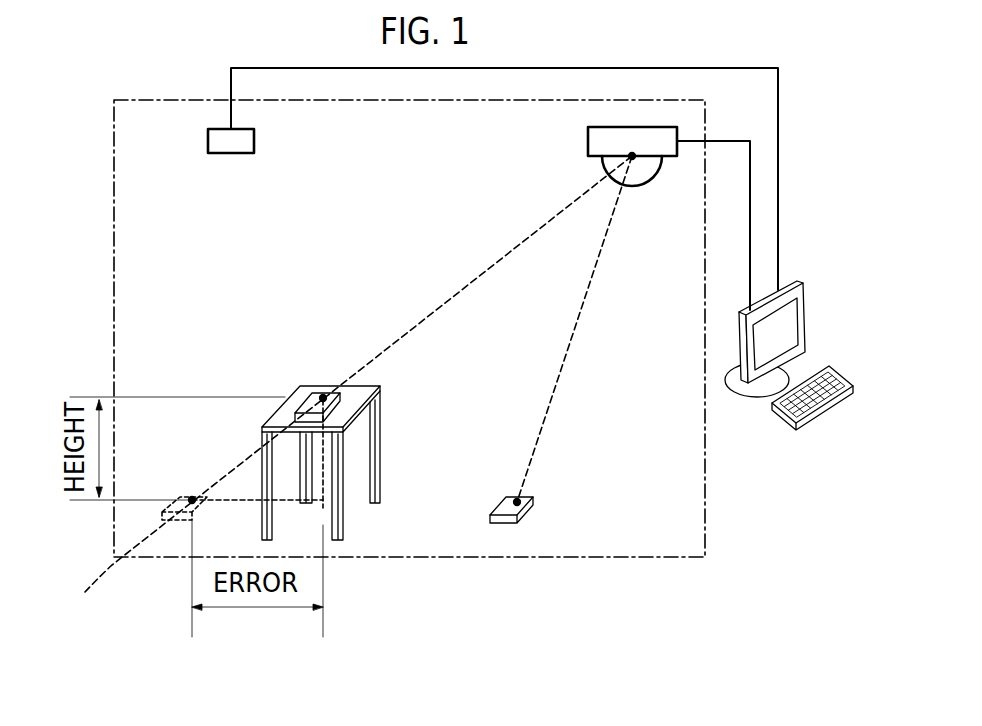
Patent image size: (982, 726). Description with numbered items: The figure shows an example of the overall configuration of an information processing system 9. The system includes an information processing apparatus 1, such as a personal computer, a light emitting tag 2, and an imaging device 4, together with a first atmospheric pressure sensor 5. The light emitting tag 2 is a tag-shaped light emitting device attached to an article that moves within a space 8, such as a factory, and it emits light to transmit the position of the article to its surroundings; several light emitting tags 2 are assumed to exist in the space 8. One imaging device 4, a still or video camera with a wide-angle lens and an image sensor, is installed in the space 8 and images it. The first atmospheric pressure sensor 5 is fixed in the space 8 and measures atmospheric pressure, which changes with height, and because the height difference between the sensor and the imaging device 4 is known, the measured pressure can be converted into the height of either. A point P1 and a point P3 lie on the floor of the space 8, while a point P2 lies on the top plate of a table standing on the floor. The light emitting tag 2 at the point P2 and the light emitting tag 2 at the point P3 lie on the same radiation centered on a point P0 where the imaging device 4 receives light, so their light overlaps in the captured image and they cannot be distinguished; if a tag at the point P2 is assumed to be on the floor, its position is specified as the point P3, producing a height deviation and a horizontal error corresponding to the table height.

The information processing apparatus 1 is at (800, 298).
The light emitting tag 2 is at (304, 400).
The imaging device 4 is at (600, 158).
The first atmospheric pressure sensor 5 is at (232, 153).
The space 8 is at (705, 423).
The information processing system 9 is at (737, 563).
The point at which the imaging device receives light P0 is at (634, 159).
The point on the floor P1 is at (517, 506).
The point on the table top plate P2 is at (325, 400).
The point on the floor P3 is at (192, 496).